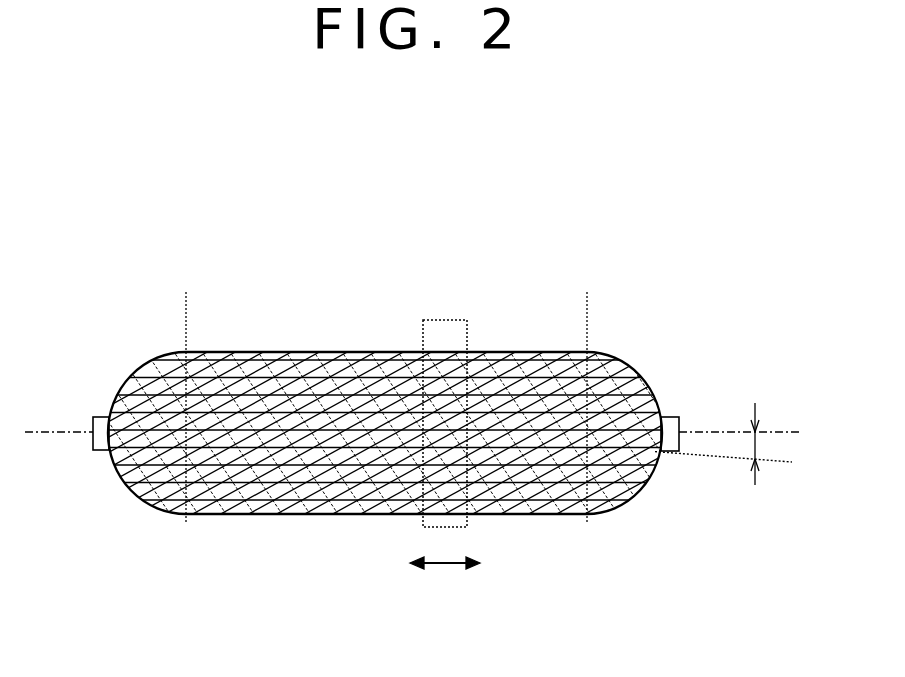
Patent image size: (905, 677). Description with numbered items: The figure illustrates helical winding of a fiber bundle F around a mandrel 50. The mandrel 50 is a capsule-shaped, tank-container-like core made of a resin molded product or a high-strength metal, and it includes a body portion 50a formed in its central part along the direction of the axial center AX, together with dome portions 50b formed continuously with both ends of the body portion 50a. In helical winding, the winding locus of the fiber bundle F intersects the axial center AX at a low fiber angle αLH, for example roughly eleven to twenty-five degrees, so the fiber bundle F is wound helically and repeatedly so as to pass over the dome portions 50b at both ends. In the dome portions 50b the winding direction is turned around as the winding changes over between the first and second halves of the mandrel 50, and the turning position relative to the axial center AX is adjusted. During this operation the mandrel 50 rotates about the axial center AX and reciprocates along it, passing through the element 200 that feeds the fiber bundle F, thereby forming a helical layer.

The mandrel 50 is at (606, 351).
The body portion 50a is at (585, 305).
The dome portions 50b is at (126, 487).
The fiber feeding head 200 is at (467, 338).
The fiber bundle F is at (548, 515).
The axial center AX is at (433, 432).
The fiber angle α LH is at (735, 434).